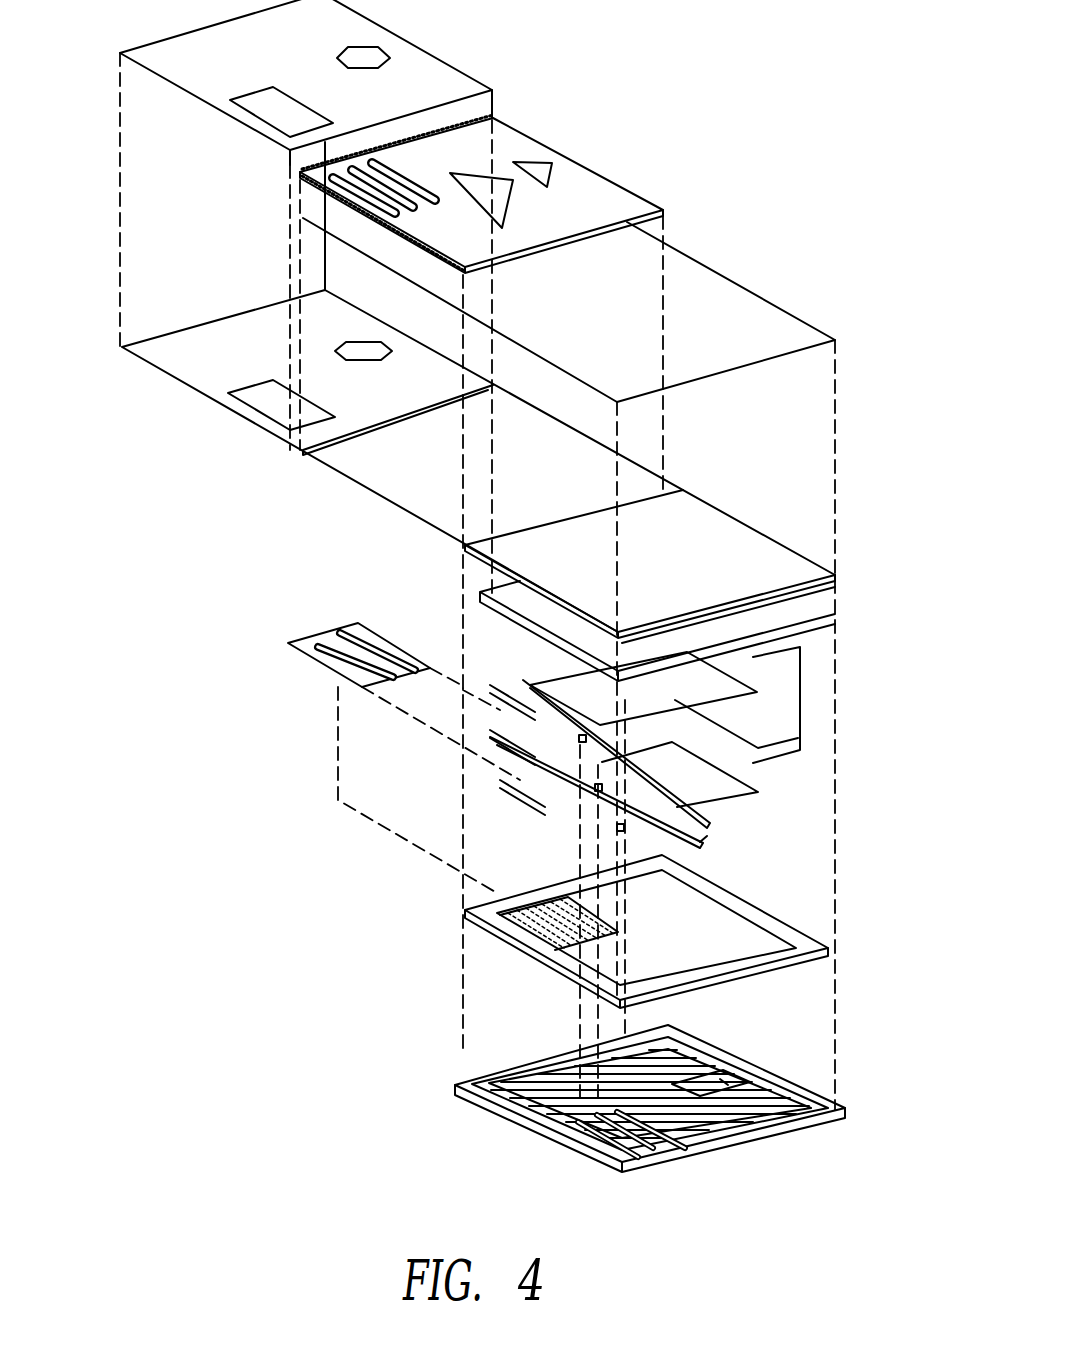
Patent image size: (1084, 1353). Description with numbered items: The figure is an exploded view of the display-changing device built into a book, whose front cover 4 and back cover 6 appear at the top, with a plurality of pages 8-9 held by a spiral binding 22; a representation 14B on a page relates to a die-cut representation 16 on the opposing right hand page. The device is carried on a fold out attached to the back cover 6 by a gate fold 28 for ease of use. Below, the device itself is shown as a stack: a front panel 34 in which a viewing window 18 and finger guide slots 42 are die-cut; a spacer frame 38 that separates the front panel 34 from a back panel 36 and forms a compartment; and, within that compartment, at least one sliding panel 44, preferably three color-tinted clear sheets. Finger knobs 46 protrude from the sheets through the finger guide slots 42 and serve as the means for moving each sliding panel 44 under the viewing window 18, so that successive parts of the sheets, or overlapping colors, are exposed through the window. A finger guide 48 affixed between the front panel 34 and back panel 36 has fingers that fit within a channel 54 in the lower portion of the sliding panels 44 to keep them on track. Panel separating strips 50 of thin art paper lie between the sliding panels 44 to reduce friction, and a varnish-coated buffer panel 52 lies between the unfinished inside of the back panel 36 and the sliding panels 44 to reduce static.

The front cover 4 is at (112, 53).
The back cover 6 is at (407, 463).
The pages 8-9 is at (650, 203).
The representation 14B is at (547, 197).
The die-cut representation 16 is at (543, 160).
The viewing window 18 is at (718, 1082).
The spiral binding 22 is at (495, 118).
The gate fold 28 is at (465, 546).
The front panel 34 is at (737, 1062).
The back panel 36 is at (735, 548).
The spacer frame 38 is at (728, 885).
The finger guide slots 42 is at (683, 1147).
The sliding panel 44 is at (803, 694).
The finger knobs 46 is at (617, 827).
The finger guide 48 is at (315, 635).
The panel separating strips 50 is at (700, 842).
The buffer panel 52 is at (793, 610).
The channel 54 is at (510, 750).